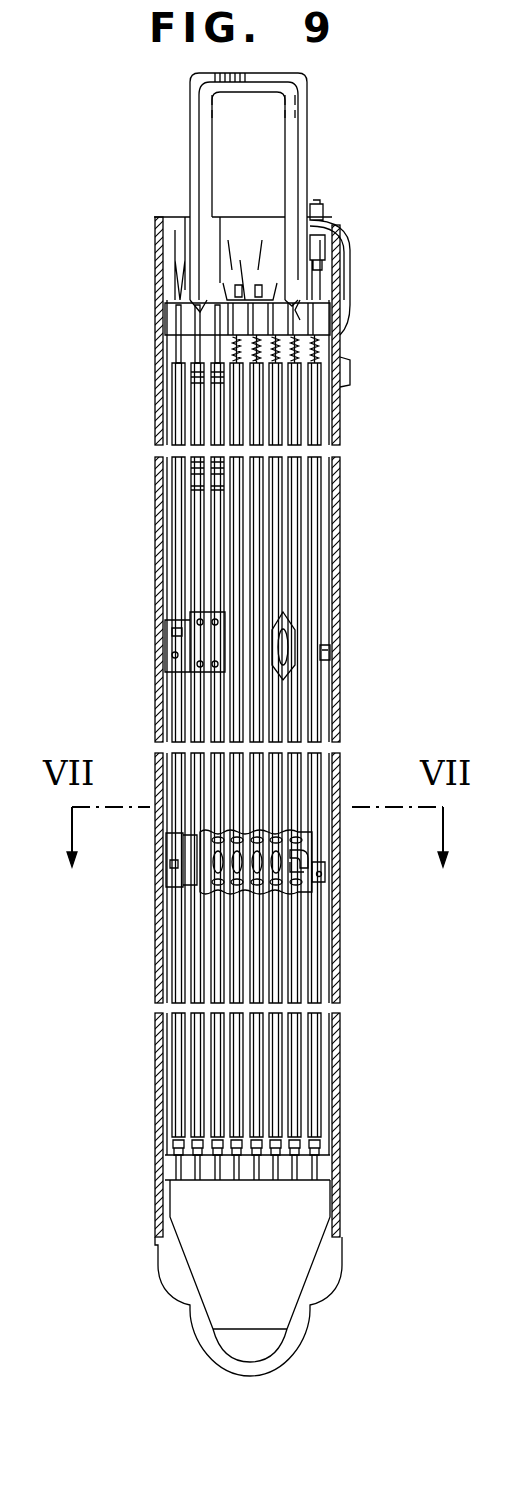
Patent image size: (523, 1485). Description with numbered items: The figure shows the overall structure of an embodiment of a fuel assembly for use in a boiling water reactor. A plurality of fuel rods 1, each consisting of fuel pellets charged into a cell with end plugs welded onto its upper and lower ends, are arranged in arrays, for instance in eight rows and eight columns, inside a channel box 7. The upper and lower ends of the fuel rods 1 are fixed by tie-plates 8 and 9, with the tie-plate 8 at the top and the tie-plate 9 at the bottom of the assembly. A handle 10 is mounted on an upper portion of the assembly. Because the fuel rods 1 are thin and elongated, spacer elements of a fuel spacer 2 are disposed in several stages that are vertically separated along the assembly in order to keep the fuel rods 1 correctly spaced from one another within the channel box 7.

The fuel rods 1 is at (317, 775).
The fuel spacer 2 is at (312, 862).
The channel box 7 is at (158, 593).
The tie-plate 8 is at (172, 330).
The tie-plate 9 is at (158, 1260).
The handle 10 is at (308, 100).